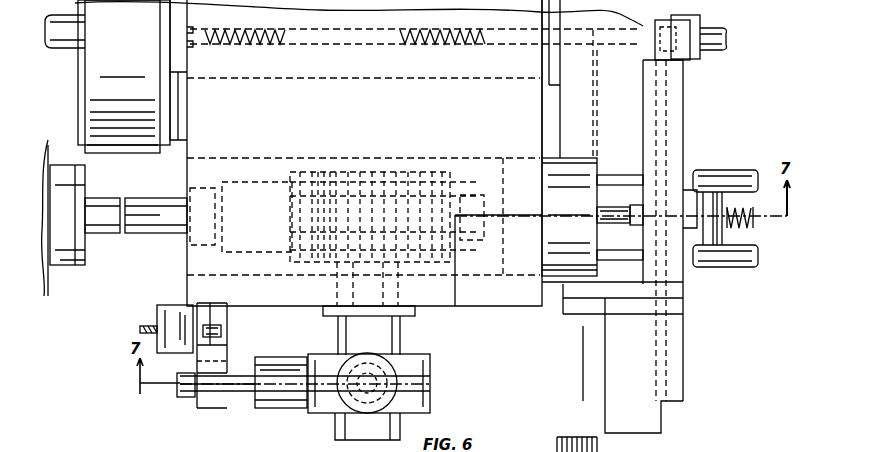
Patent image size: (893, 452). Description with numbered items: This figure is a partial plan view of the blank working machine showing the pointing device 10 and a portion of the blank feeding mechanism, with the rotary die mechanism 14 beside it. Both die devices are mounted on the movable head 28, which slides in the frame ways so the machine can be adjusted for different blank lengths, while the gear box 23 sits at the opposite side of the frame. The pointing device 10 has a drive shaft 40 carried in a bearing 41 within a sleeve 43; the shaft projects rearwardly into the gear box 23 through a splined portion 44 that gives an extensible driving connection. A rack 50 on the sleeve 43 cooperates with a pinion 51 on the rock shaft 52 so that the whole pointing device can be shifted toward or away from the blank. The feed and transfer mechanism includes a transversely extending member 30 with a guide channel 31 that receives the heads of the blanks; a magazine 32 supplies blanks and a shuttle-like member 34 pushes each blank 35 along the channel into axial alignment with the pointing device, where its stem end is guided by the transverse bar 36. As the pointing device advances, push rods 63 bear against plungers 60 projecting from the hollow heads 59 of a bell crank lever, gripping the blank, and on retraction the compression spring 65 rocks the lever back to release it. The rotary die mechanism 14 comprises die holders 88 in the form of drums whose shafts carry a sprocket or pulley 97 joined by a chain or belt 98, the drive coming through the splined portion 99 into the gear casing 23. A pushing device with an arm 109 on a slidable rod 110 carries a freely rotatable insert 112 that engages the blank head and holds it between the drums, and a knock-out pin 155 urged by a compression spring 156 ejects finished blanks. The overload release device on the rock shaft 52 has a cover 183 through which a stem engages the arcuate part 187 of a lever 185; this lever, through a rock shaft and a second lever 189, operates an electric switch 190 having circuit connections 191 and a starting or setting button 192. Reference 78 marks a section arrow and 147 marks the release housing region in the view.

The die mechanism 10 is at (557, 298).
The rotary die mechanism 14 is at (544, 92).
The gear box 23 is at (48, 156).
The movable head 28 is at (497, 303).
The transversely extending member 30 is at (676, 118).
The guide channel 31 is at (668, 136).
The magazine 32 is at (678, 322).
The shuttle-like member 34 is at (656, 413).
The blank 35 is at (606, 206).
The transverse bar 36 is at (596, 175).
The drive shaft 40 is at (476, 190).
The bearing 41 is at (200, 186).
The sleeve 43 is at (248, 182).
The splined portion 44 is at (105, 225).
The rack 50 is at (300, 178).
The pinion 51 is at (346, 188).
The rock shaft 52 is at (396, 340).
The hollow head 59 is at (700, 268).
The plunger 60 is at (696, 268).
The push rod 63 is at (600, 176).
The compression spring 65 is at (760, 225).
The arrow 78 is at (690, 158).
The die holder 88 is at (596, 90).
The sprocket or pulley 97 is at (82, 110).
The chain or belt 98 is at (95, 89).
The splined portion 99 is at (72, 43).
The arm 109 is at (720, 78).
The rod 110 is at (716, 46).
The insert 112 is at (672, 60).
The valve body 147 is at (425, 410).
The pin 155 is at (530, 40).
The compression spring 156 is at (272, 46).
The cover 183 is at (395, 373).
The lever 185 is at (290, 356).
The arcuate part 187 is at (430, 388).
The lever 189 is at (227, 320).
The electric switch 190 is at (176, 304).
The circuit connections 191 is at (146, 326).
The starting or setting button 192 is at (221, 336).